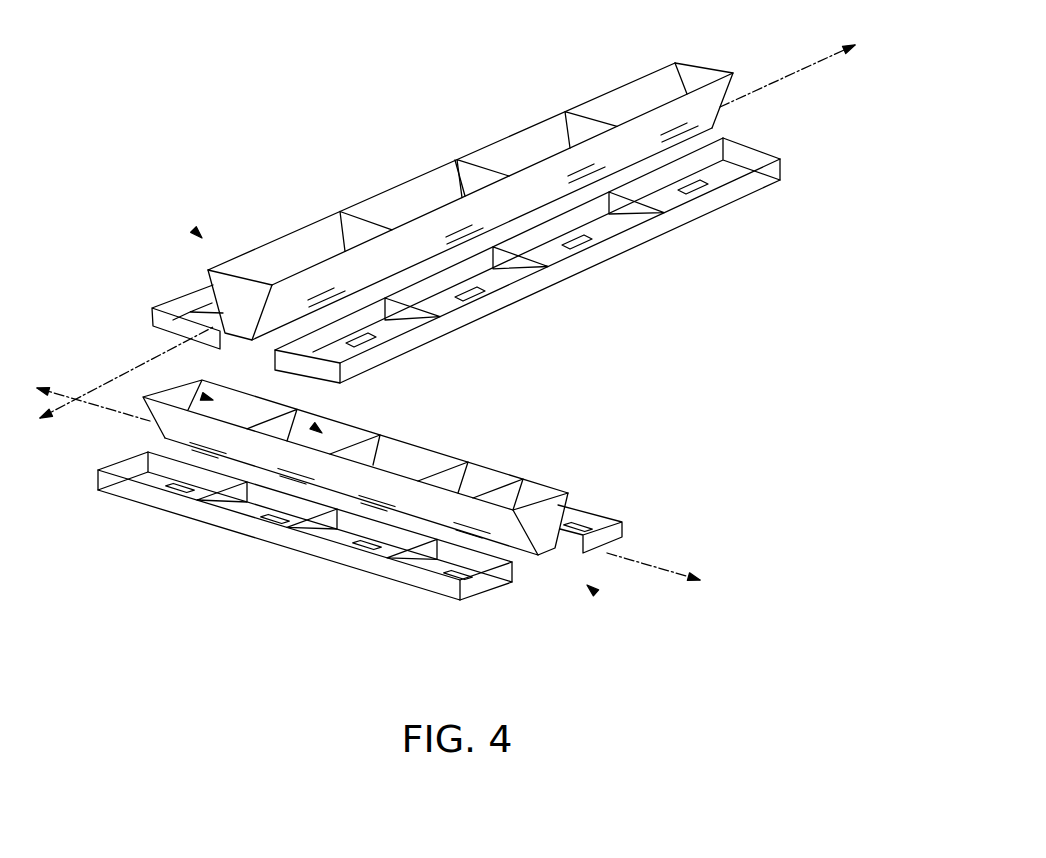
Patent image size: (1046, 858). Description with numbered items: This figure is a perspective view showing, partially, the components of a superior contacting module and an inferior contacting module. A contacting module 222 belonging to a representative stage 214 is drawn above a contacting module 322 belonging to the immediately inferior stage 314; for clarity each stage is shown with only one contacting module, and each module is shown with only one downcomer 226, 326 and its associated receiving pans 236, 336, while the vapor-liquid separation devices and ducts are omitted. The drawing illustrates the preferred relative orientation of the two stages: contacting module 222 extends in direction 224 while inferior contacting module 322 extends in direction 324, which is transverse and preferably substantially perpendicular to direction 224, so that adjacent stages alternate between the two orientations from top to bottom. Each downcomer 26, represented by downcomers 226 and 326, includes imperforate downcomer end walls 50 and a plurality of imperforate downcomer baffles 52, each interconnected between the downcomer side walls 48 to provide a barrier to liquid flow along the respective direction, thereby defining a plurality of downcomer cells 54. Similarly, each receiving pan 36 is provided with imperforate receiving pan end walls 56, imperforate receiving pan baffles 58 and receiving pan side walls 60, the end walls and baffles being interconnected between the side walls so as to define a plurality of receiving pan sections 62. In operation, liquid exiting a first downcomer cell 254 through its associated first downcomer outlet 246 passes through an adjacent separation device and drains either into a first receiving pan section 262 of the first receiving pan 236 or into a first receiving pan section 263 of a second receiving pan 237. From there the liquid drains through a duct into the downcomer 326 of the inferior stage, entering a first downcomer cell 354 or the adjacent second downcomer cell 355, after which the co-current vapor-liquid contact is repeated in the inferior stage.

The downcomer 26 is at (657, 64).
The receiving pan 36 is at (683, 217).
The downcomer side walls 48 is at (650, 90).
The downcomer end wall 50 is at (697, 75).
The downcomer baffle 52 is at (483, 135).
The downcomer cells 54 is at (552, 128).
The receiving pan end wall 56 is at (745, 155).
The receiving pan baffle 58 is at (635, 213).
The receiving pan side walls 60 is at (547, 278).
The receiving pan sections 62 is at (707, 185).
The stage 214 is at (196, 232).
The contacting module 222 is at (470, 152).
The direction 224 is at (808, 67).
The downcomer 226 is at (598, 92).
The first receiving pan 236 is at (322, 376).
The second receiving pan 237 is at (150, 330).
The first downcomer outlet 246 is at (340, 298).
The first downcomer cell 254 is at (295, 250).
The first receiving pan section 262 is at (380, 341).
The first receiving pan section 263 is at (215, 313).
The inferior stage 314 is at (593, 591).
The contacting module 322 is at (527, 520).
The direction 324 is at (638, 560).
The downcomer 326 is at (513, 470).
The receiving pan 336 is at (350, 560).
The first downcomer cell 354 is at (202, 396).
The second downcomer cell 355 is at (312, 426).